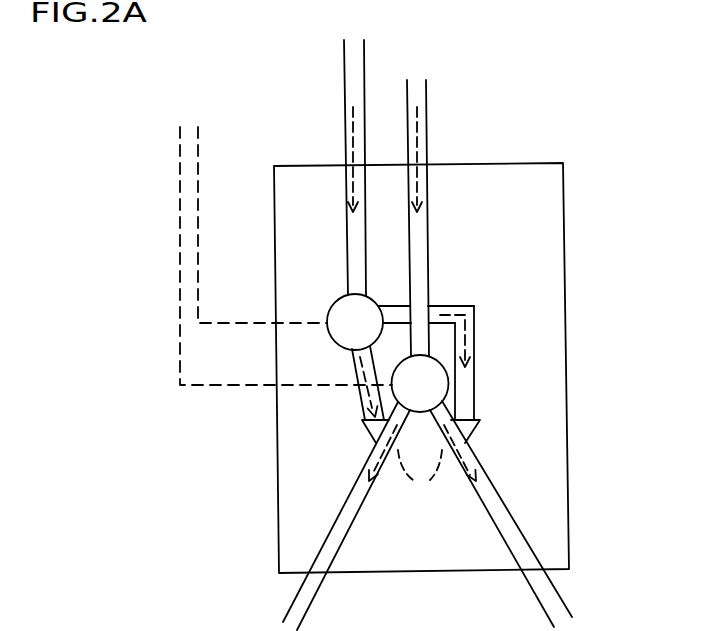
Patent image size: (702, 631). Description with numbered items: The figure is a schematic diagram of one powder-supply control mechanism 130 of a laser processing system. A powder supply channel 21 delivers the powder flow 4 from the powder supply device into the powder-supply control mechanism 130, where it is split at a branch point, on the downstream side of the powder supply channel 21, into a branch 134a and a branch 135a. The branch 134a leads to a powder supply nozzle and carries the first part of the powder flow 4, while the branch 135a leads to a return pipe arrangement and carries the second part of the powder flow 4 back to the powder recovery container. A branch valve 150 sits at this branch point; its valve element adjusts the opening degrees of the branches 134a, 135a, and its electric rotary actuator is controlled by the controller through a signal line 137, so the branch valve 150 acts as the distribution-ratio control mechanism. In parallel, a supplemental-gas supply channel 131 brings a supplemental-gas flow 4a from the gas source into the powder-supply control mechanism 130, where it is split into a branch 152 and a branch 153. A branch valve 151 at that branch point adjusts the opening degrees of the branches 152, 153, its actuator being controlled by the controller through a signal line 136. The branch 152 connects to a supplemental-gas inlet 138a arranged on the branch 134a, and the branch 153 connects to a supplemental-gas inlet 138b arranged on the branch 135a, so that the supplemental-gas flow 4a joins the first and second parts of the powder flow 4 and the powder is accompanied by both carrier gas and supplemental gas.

The powder-supply control mechanism 130 is at (507, 163).
The supplemental-gas supply channel 131 is at (350, 50).
The powder supply channel 21 is at (417, 95).
The powder flow 4 is at (418, 187).
The supplemental-gas flow 4a is at (352, 130).
The signal line 136 is at (198, 152).
The signal line 137 is at (179, 175).
The branch valve 150 is at (448, 383).
The branch valve 151 is at (334, 301).
The branch 152 is at (474, 318).
The branch 153 is at (352, 372).
The supplemental-gas inlet 138a is at (468, 430).
The supplemental-gas inlet 138b is at (362, 428).
The branch 134a is at (483, 485).
The branch 135a is at (357, 497).